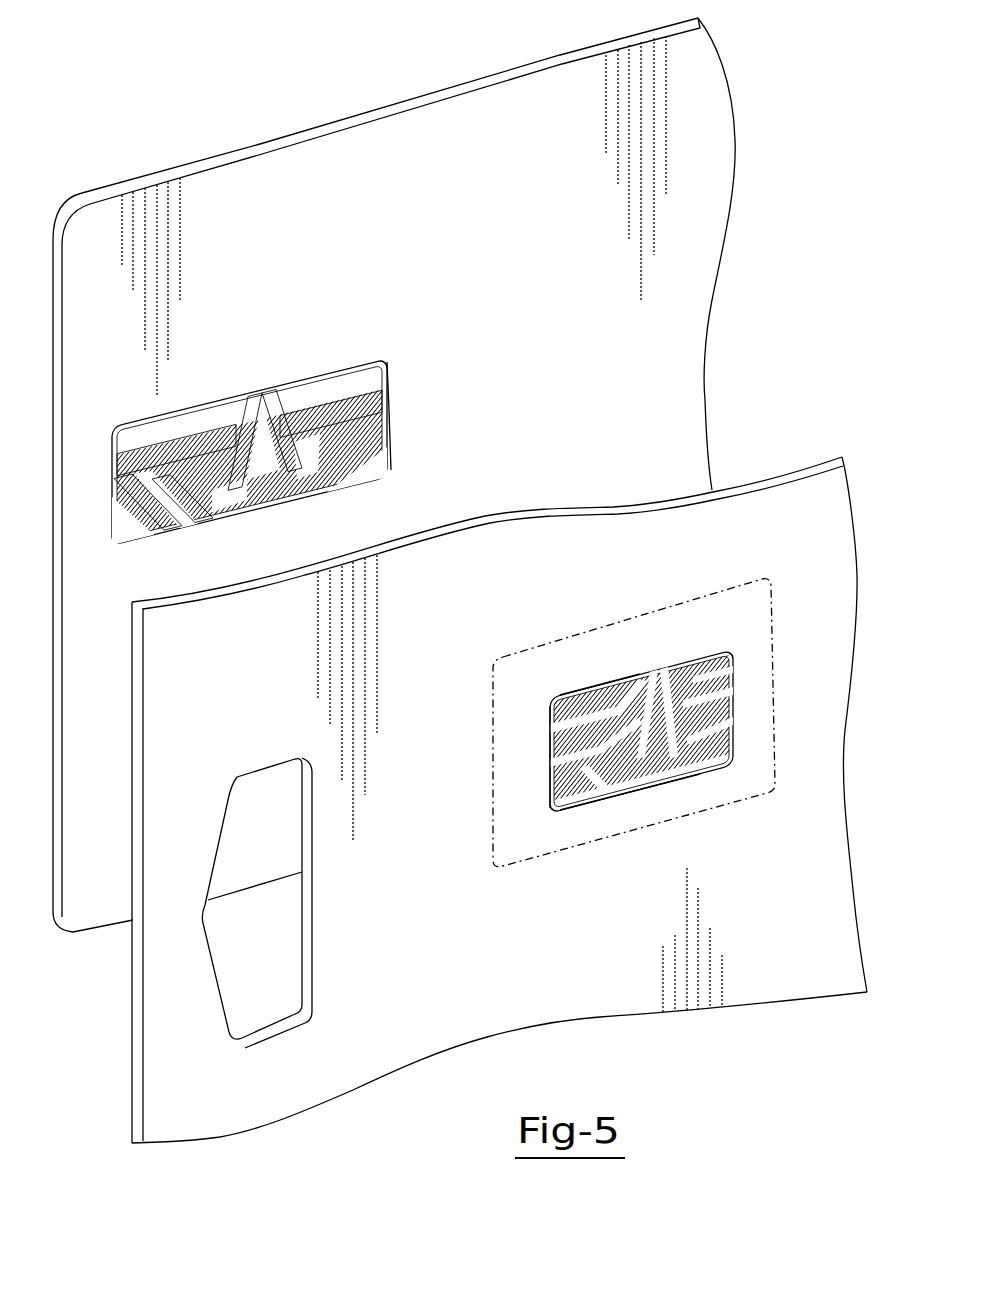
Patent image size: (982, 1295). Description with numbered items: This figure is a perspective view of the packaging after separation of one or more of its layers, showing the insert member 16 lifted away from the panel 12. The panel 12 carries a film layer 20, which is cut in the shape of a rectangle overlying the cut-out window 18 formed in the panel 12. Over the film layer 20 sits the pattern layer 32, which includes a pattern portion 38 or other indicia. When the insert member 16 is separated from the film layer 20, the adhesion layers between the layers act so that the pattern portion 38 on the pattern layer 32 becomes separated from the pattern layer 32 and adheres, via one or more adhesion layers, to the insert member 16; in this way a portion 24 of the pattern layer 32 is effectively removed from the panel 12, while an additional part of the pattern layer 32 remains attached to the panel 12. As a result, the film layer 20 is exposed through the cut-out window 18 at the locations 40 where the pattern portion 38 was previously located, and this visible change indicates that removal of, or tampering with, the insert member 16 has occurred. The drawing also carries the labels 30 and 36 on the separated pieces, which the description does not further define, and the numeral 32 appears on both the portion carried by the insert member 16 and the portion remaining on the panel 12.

The panel 12 is at (754, 500).
The insert member 16 is at (292, 158).
The cut-out window 18 is at (631, 773).
The film layer 20 is at (754, 585).
The portion of the pattern layer 24 is at (292, 491).
The second patch 30 is at (293, 430).
The pattern layer 32 is at (393, 458).
The border 36 is at (552, 706).
The pattern portion 38 is at (393, 408).
The locations 40 is at (700, 720).